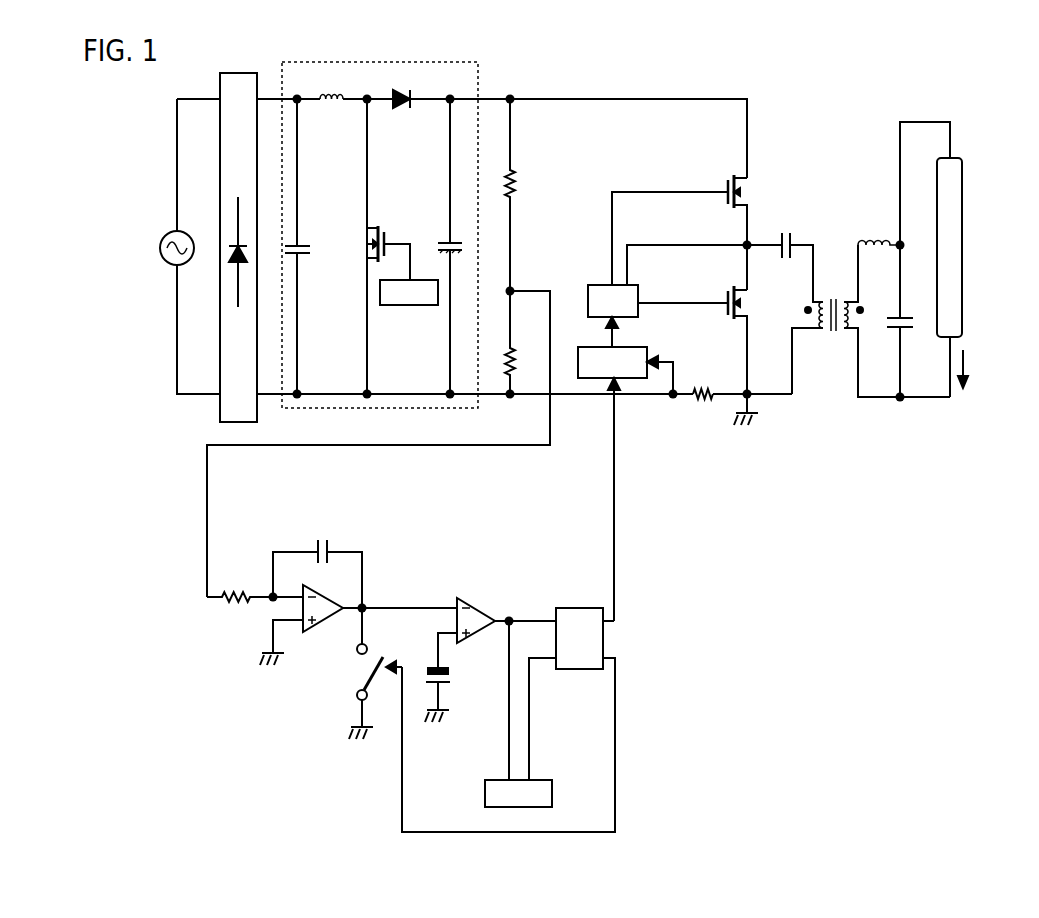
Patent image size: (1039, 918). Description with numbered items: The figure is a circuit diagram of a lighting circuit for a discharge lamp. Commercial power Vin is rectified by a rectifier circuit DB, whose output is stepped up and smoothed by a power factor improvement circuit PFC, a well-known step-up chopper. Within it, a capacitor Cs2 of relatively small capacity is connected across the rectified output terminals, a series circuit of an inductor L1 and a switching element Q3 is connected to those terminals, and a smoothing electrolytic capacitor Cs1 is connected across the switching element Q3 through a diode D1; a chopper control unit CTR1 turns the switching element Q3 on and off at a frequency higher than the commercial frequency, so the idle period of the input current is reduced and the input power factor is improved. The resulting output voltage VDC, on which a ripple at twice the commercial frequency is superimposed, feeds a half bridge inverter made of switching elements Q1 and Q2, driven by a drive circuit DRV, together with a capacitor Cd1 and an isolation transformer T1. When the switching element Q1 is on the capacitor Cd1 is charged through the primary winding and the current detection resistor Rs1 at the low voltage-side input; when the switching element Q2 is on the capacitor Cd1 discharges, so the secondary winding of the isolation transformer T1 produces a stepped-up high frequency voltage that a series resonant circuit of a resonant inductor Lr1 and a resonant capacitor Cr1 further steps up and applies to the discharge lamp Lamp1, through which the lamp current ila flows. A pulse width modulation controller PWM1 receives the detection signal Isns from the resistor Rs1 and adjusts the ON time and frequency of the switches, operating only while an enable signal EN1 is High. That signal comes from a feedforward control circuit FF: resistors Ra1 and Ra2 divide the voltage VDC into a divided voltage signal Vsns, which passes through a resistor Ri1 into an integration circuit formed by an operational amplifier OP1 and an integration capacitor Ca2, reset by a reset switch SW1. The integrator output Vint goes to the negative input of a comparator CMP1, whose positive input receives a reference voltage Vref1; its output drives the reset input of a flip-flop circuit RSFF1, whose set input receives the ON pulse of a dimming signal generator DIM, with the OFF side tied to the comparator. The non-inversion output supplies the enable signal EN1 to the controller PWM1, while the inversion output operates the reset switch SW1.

The commercial power Vin is at (159, 248).
The rectifier circuit DB is at (238, 236).
The power factor improvement circuit PFC is at (380, 224).
The inductor L1 is at (332, 85).
The diode D1 is at (405, 88).
The capacitor Cs2 is at (309, 246).
The switching element Q3 is at (375, 253).
The chopper control unit CTR1 is at (409, 292).
The electrolytic capacitor Cs1 is at (439, 246).
The output voltage VDC is at (512, 90).
The resistor Ra1 is at (531, 195).
The divided voltage signal Vsns is at (388, 432).
The resistor Ra2 is at (528, 342).
The switching element Q1 is at (679, 223).
The switching element Q2 is at (692, 293).
The drive circuit DRV is at (667, 296).
The pulse width modulation controller PWM1 is at (612, 362).
The detection signal Isns is at (677, 365).
The current detection resistor Rs1 is at (711, 383).
The enable signal EN1 is at (634, 499).
The capacitor Cd1 is at (785, 253).
The isolation transformer T1 is at (871, 321).
The resonant inductor Lr1 is at (878, 226).
The resonant capacitor Cr1 is at (891, 321).
The discharge lamp Lamp1 is at (962, 259).
The lamp current ila is at (975, 369).
The resistor Ri1 is at (255, 610).
The integration capacitor Ca2 is at (317, 561).
The operational amplifier OP1 is at (358, 620).
The output of the integration circuit Vint is at (367, 596).
The feedforward control circuit FF is at (421, 595).
The reset switch SW1 is at (357, 673).
The comparator CMP1 is at (502, 610).
The reference voltage Vref1 is at (462, 677).
The flip-flop circuit RSFF1 is at (508, 710).
The dimming off signal OFF is at (487, 700).
The ON pulse signal ON is at (550, 719).
The dimming signal generator DIM is at (518, 793).